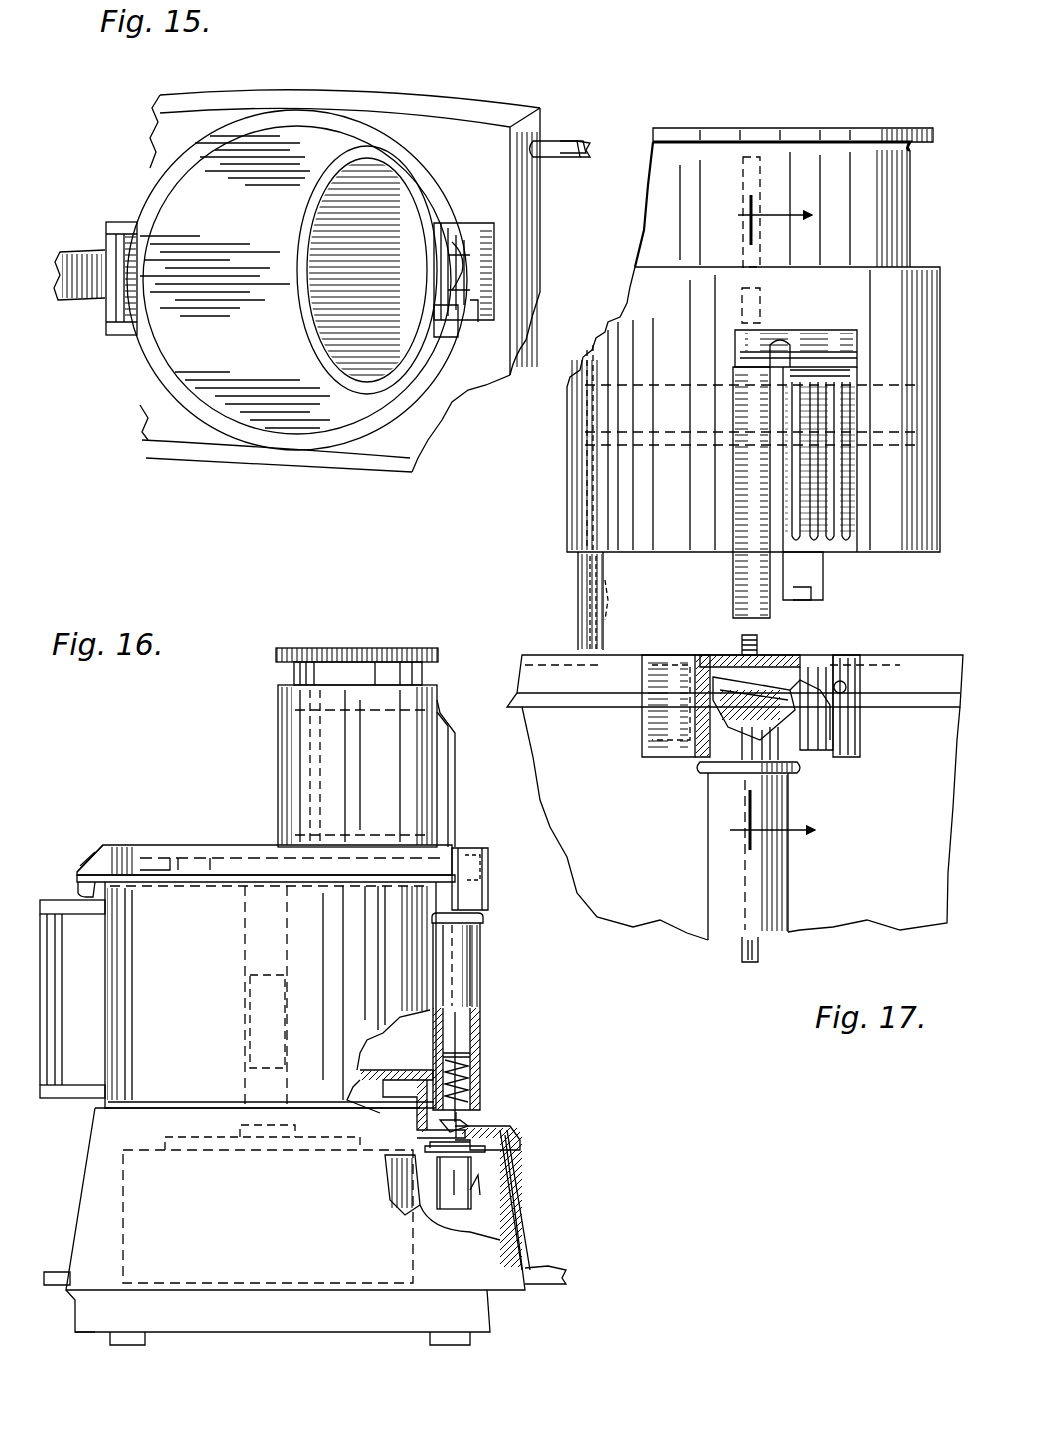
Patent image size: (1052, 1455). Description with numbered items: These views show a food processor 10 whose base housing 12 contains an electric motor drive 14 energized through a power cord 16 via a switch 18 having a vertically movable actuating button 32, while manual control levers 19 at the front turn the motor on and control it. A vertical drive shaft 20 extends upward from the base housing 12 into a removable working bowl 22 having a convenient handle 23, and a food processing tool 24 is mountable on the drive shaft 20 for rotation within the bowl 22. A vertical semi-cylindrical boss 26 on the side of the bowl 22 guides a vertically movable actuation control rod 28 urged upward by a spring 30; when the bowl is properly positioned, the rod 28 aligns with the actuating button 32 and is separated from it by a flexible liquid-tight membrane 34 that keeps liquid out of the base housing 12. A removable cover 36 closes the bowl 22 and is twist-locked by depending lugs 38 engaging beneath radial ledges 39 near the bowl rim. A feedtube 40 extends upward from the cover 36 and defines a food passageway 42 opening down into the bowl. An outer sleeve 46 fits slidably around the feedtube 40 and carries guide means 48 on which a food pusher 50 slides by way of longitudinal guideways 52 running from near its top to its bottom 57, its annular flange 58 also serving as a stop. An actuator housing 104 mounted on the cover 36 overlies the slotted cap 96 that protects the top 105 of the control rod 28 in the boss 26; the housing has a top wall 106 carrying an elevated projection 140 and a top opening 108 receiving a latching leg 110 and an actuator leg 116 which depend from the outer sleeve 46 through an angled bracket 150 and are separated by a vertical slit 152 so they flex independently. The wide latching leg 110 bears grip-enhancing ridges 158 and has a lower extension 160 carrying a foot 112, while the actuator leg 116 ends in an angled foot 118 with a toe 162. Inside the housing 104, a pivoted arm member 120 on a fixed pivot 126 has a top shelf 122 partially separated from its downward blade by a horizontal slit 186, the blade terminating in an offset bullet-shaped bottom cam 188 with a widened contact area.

In FIG. 15, the food processor 10 is at (494, 70).
In FIG. 16, the food processor 10 is at (574, 1076).
In FIG. 15, the base housing 12 is at (398, 440).
In FIG. 16, the electric motor drive 14 is at (442, 1197).
In FIG. 15, the power cord 16 is at (568, 138).
In FIG. 16, the power cord 16 is at (560, 1268).
In FIG. 17, the power cord 16 is at (570, 140).
In FIG. 16, the switch 18 is at (463, 1188).
In FIG. 17, the switch 18 is at (788, 525).
In FIG. 16, the manual control levers 19 is at (56, 1272).
In FIG. 16, the vertical drive shaft 20 is at (250, 1086).
In FIG. 16, the working bowl 22 is at (142, 992).
In FIG. 17, the working bowl 22 is at (878, 918).
In FIG. 15, the bowl handle 23 is at (76, 252).
In FIG. 16, the bowl handle 23 is at (62, 1065).
In FIG. 16, the food processing tool 24 is at (232, 890).
In FIG. 16, the vertical semi-cylindrical boss 26 is at (483, 976).
In FIG. 17, the vertical semi-cylindrical boss 26 is at (790, 897).
In FIG. 16, the actuation control rod 28 is at (458, 1030).
In FIG. 17, the actuation control rod 28 is at (742, 952).
In FIG. 16, the spring 30 is at (484, 1076).
In FIG. 16, the actuating button 32 is at (498, 1142).
In FIG. 16, the flexible liquid-tight membrane 34 is at (470, 1120).
In FIG. 15, the cover 36 is at (160, 345).
In FIG. 16, the cover 36 is at (124, 845).
In FIG. 17, the cover 36 is at (545, 655).
In FIG. 15, the depending lugs 38 is at (110, 222).
In FIG. 16, the depending lugs 38 is at (78, 880).
In FIG. 17, the depending lugs 38 is at (644, 724).
In FIG. 16, the radial ledges 39 is at (88, 860).
In FIG. 16, the feedtube 40 is at (292, 746).
In FIG. 17, the feedtube 40 is at (578, 562).
In FIG. 17, the food passageway 42 is at (600, 600).
In FIG. 16, the outer sleeve 46 is at (278, 775).
In FIG. 17, the outer sleeve 46 is at (940, 318).
In FIG. 17, the guide means 48 is at (762, 296).
In FIG. 15, the food pusher 50 is at (402, 166).
In FIG. 16, the food pusher 50 is at (290, 672).
In FIG. 17, the food pusher 50 is at (912, 224).
In FIG. 17, the longitudinal guideways 52 is at (762, 172).
In FIG. 15, the bottom of food pusher 57 is at (392, 272).
In FIG. 17, the bottom of food pusher 57 is at (620, 452).
In FIG. 15, the annular flange 58 is at (412, 186).
In FIG. 16, the annular flange 58 is at (276, 652).
In FIG. 17, the annular flange 58 is at (935, 136).
In FIG. 17, the cap 96 is at (760, 742).
In FIG. 15, the actuator housing 104 is at (486, 232).
In FIG. 16, the actuator housing 104 is at (472, 893).
In FIG. 17, the actuator housing 104 is at (690, 752).
In FIG. 17, the top of control rod 105 is at (780, 738).
In FIG. 16, the top wall 106 is at (470, 856).
In FIG. 17, the top wall 106 is at (705, 656).
In FIG. 15, the top opening 108 is at (452, 242).
In FIG. 17, the latching leg 110 is at (860, 468).
In FIG. 17, the foot 112 is at (814, 602).
In FIG. 16, the actuator leg 116 is at (455, 785).
In FIG. 17, the actuator leg 116 is at (746, 496).
In FIG. 17, the angled foot 118 is at (740, 598).
In FIG. 16, the pivoted arm member 120 is at (488, 910).
In FIG. 17, the pivoted arm member 120 is at (706, 692).
In FIG. 17, the top shelf 122 is at (800, 662).
In FIG. 17, the fixed pivot 126 is at (850, 688).
In FIG. 15, the elevated projection 140 is at (480, 324).
In FIG. 16, the elevated projection 140 is at (486, 848).
In FIG. 17, the elevated projection 140 is at (742, 640).
In FIG. 16, the angled bracket 150 is at (442, 718).
In FIG. 17, the angled bracket 150 is at (745, 338).
In FIG. 17, the vertical slit 152 is at (776, 460).
In FIG. 17, the grip-enhancing ridges 158 is at (842, 478).
In FIG. 17, the extension 160 is at (826, 572).
In FIG. 17, the toe 162 is at (750, 618).
In FIG. 17, the horizontal slit 186 is at (832, 730).
In FIG. 17, the bottom cam 188 is at (725, 708).